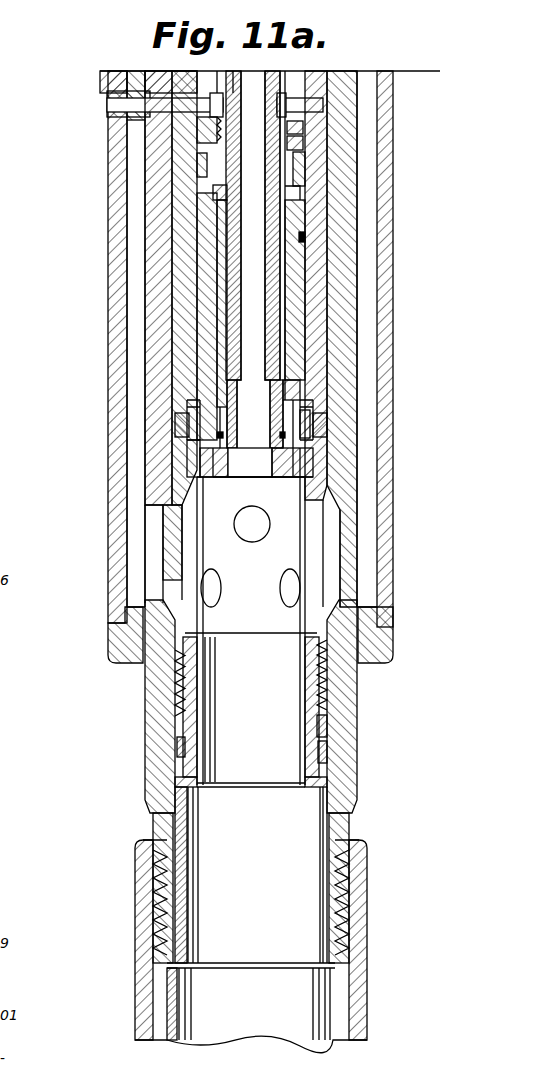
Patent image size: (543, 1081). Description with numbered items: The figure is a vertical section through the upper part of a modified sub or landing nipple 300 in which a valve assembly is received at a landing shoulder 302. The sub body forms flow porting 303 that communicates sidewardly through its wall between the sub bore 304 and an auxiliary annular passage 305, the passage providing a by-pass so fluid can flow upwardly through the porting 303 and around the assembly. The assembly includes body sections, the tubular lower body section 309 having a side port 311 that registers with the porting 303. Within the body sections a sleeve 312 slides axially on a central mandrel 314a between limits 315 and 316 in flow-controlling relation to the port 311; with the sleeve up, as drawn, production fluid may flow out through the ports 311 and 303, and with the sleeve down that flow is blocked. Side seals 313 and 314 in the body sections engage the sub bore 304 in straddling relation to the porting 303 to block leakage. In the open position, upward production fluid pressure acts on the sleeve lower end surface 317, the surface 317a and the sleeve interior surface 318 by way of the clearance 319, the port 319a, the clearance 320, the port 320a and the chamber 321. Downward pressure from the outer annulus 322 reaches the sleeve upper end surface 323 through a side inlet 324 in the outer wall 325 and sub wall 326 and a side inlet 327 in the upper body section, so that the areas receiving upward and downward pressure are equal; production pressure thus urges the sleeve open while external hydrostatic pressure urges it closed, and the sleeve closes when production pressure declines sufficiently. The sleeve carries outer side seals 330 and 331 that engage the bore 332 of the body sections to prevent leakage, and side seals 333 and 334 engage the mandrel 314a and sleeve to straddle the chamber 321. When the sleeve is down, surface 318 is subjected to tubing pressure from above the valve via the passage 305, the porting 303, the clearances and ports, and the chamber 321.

The sub or landing nipple 300 is at (126, 232).
The landing shoulder 302 is at (330, 290).
The flow porting 303 is at (357, 511).
The sub bore 304 is at (180, 671).
The auxiliary annular passage 305 is at (135, 488).
The lower body section 309 is at (313, 718).
The side port 311 is at (190, 521).
The sleeve 312 is at (200, 311).
The side seal 313 is at (180, 373).
The side seal 314 is at (178, 738).
The central mandrel 314a is at (237, 268).
The limit 315 is at (280, 411).
The limit 316 is at (305, 129).
The sleeve lower end surface 317 is at (212, 478).
The surface 317a is at (200, 445).
The sleeve interior surface 318 is at (283, 200).
The clearance 319 is at (190, 412).
The port 319a is at (185, 402).
The clearance 320 is at (300, 388).
The port 320a is at (213, 192).
The chamber 321 is at (280, 330).
The outer annulus 322 is at (78, 349).
The sleeve upper end surface 323 is at (218, 62).
The side inlet 324 is at (127, 107).
The outer wall 325 is at (127, 187).
The sub wall 326 is at (108, 84).
The side inlet 327 is at (208, 85).
The outer side seal 330 is at (303, 170).
The outer side seal 331 is at (282, 431).
The bore 332 is at (305, 237).
The side seal 333 is at (280, 140).
The side seal 334 is at (197, 450).